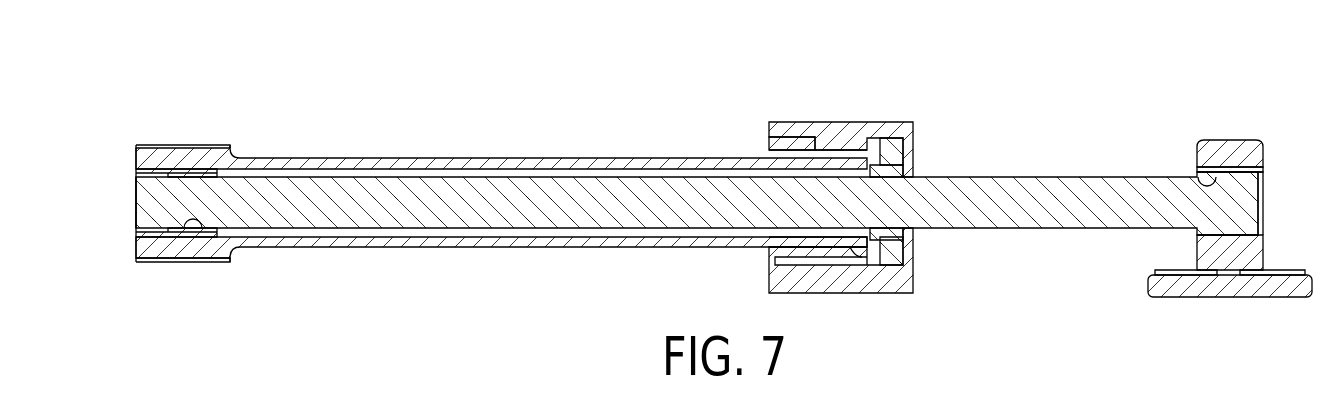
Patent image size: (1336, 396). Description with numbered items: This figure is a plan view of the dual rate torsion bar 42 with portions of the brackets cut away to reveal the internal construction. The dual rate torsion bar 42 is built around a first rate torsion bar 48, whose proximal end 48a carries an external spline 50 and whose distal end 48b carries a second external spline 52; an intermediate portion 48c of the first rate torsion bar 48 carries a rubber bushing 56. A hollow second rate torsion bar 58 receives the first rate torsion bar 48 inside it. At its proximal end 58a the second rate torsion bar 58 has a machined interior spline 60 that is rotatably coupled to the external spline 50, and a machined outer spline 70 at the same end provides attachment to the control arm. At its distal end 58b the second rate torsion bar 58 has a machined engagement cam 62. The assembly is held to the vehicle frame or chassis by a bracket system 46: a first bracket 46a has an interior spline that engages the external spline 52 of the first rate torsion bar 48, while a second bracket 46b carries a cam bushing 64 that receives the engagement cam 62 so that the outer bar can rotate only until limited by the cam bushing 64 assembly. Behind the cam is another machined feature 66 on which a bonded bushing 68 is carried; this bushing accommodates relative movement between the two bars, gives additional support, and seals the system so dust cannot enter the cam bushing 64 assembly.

The dual rate torsion bar 42 is at (667, 92).
The bracket system 46 is at (1186, 82).
The first bracket 46a is at (1228, 140).
The second bracket 46b is at (902, 122).
The first rate torsion bar 48 is at (1046, 188).
The proximal end 48a is at (150, 207).
The distal end 48b is at (1245, 210).
The intermediate portion 48c is at (902, 172).
The external spline 50 is at (165, 145).
The external spline 52 is at (1263, 169).
The rubber bushing 56 is at (893, 152).
The second rate torsion bar 58 is at (522, 165).
The proximal end 58a is at (193, 143).
The distal end 58b is at (772, 262).
The interior spline 60 is at (193, 230).
The engagement cam 62 is at (837, 153).
The cam bushing 64 is at (847, 248).
The machined feature 66 is at (788, 143).
The bonded bushing 68 is at (802, 143).
The outer spline 70 is at (212, 145).